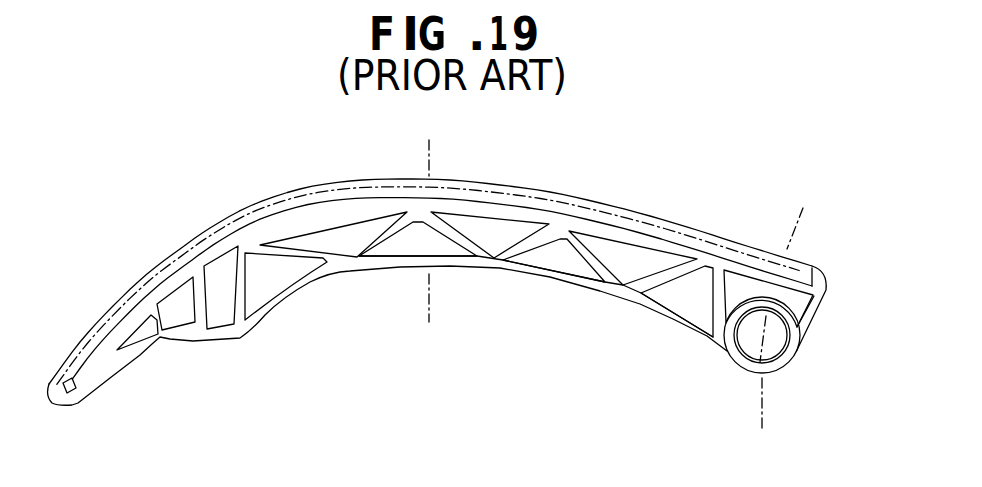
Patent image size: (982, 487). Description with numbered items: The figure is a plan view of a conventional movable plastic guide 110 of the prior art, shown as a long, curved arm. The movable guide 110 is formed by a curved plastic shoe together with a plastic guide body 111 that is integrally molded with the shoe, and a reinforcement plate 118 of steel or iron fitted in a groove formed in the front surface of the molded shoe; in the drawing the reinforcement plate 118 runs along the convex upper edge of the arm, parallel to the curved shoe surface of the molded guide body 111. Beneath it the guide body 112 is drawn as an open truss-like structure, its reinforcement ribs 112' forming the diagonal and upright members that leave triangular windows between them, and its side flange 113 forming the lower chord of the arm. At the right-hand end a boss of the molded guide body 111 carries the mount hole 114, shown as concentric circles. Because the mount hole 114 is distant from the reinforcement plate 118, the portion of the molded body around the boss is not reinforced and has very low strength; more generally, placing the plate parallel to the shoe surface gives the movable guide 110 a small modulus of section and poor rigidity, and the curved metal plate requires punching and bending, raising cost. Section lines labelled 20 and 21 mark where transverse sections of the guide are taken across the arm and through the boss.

The movable plastic guide 110 is at (565, 180).
The plastic guide body 111 is at (648, 222).
The guide body 112 is at (554, 295).
The reinforcement ribs 112' is at (286, 310).
The side flange 113 is at (593, 287).
The mount hole 114 is at (745, 350).
The reinforcement plate 118 is at (257, 228).
The section line 20- 20 is at (810, 223).
The section line 21- 21 is at (424, 147).